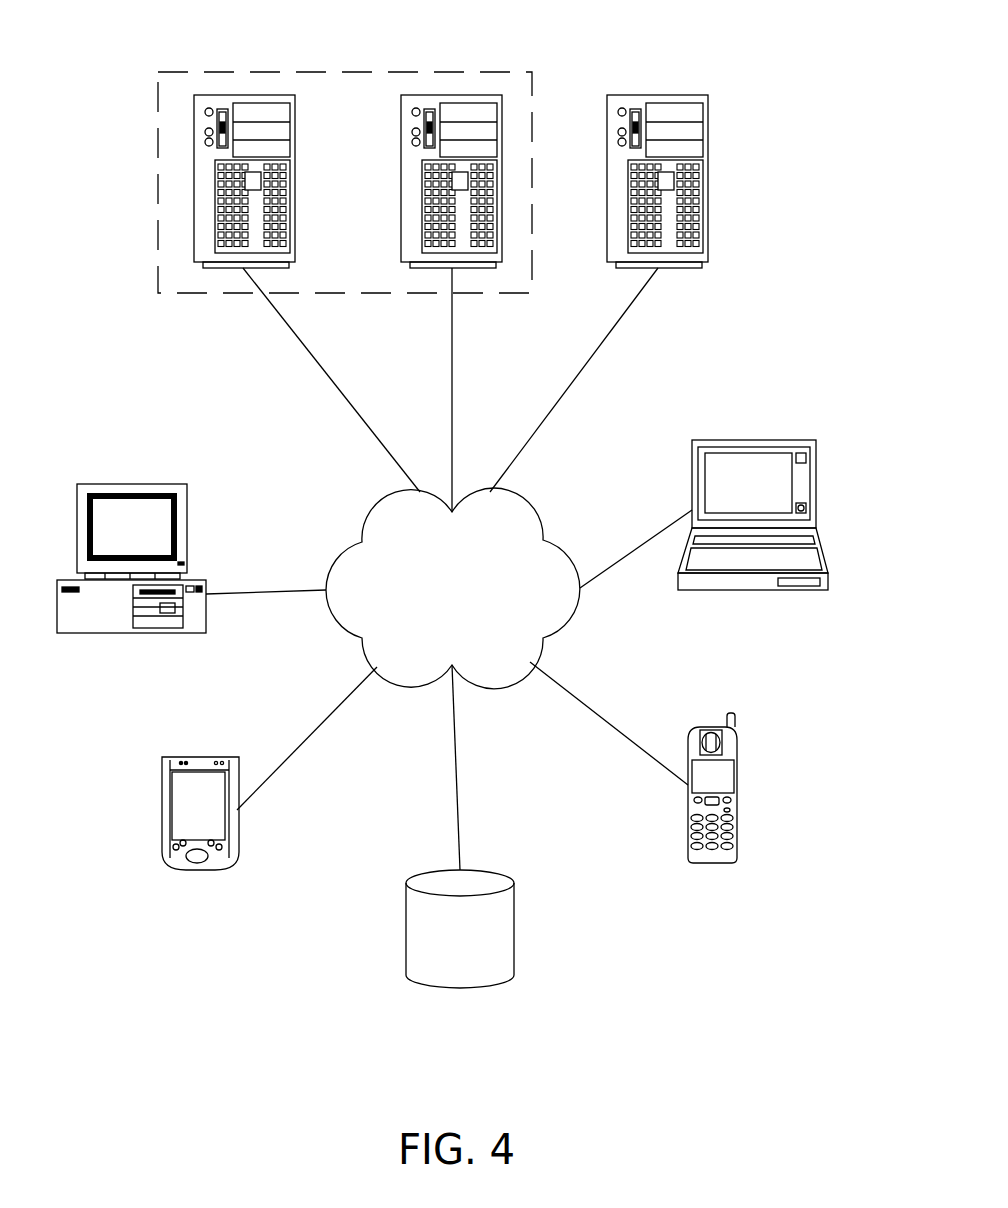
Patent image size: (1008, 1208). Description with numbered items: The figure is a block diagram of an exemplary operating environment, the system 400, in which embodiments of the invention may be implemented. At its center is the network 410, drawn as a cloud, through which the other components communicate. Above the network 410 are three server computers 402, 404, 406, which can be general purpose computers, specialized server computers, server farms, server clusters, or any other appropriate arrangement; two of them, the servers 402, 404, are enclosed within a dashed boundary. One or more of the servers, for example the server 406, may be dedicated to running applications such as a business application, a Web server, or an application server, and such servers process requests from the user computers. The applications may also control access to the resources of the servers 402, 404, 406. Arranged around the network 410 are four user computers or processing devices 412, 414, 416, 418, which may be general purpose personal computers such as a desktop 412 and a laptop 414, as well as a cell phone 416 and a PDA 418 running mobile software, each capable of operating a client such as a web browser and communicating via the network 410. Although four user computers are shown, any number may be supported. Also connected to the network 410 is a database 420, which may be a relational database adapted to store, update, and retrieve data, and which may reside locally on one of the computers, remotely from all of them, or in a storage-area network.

The system 400 is at (801, 100).
The server computer 402 is at (228, 95).
The server computer 404 is at (450, 95).
The server computer 406 is at (711, 178).
The network 410 is at (433, 636).
The user computer 412 is at (128, 484).
The user computer 414 is at (750, 440).
The user computer 416 is at (708, 863).
The user computer 418 is at (217, 870).
The database 420 is at (443, 969).